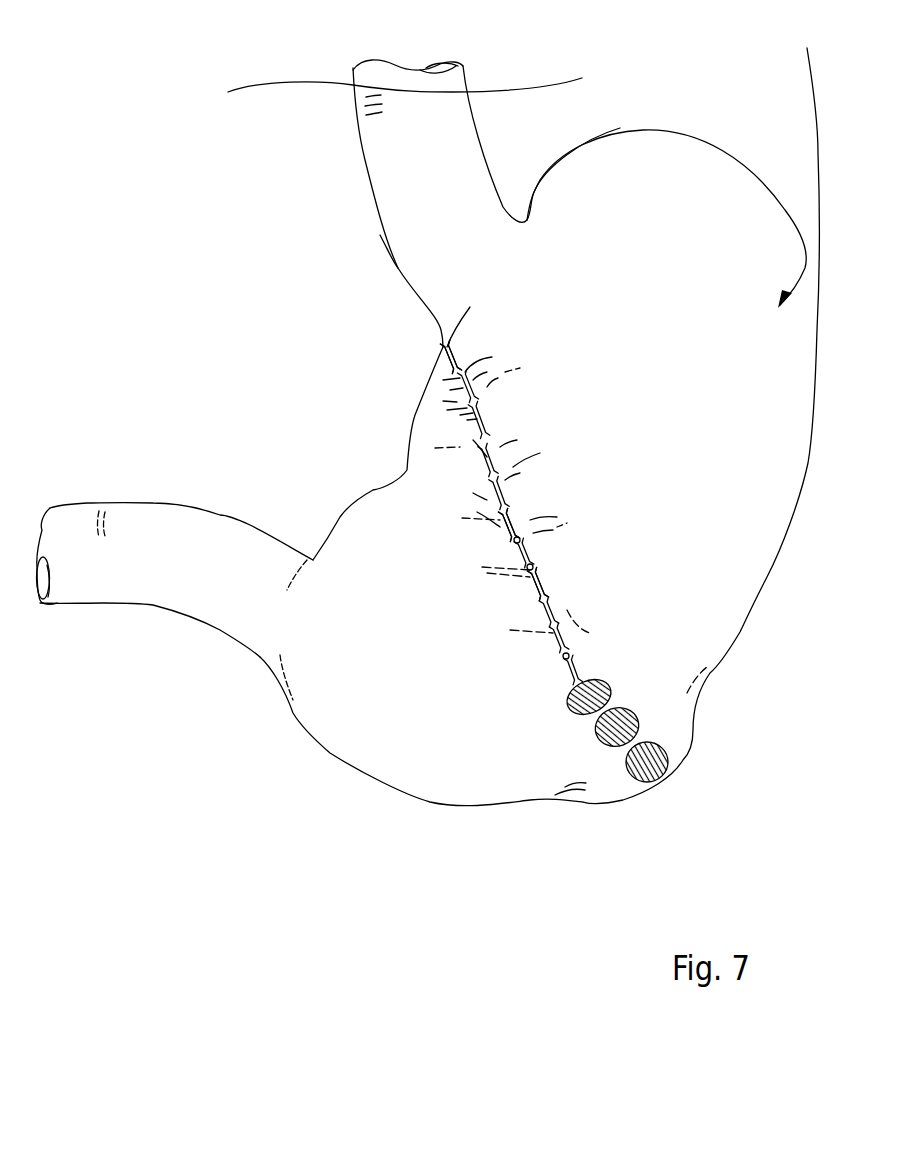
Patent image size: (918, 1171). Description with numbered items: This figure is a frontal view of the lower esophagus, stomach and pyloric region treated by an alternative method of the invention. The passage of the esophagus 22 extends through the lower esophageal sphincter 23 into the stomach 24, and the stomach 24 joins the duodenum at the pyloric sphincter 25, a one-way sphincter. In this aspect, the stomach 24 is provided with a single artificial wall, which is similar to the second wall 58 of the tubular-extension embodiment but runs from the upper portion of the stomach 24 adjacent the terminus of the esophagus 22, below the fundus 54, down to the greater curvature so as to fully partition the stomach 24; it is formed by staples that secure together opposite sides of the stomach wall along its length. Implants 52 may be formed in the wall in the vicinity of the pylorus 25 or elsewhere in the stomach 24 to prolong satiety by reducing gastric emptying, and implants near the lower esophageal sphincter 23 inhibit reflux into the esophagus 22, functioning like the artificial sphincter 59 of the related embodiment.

The esophagus 22 is at (358, 148).
The lower esophageal sphincter 23 is at (397, 267).
The stomach 24 is at (539, 414).
The pyloric sphincter 25 is at (177, 513).
The implants 52 is at (668, 755).
The fundus 54 is at (719, 128).
The second wall 58 is at (468, 434).
The artificial sphincter 59 is at (615, 762).